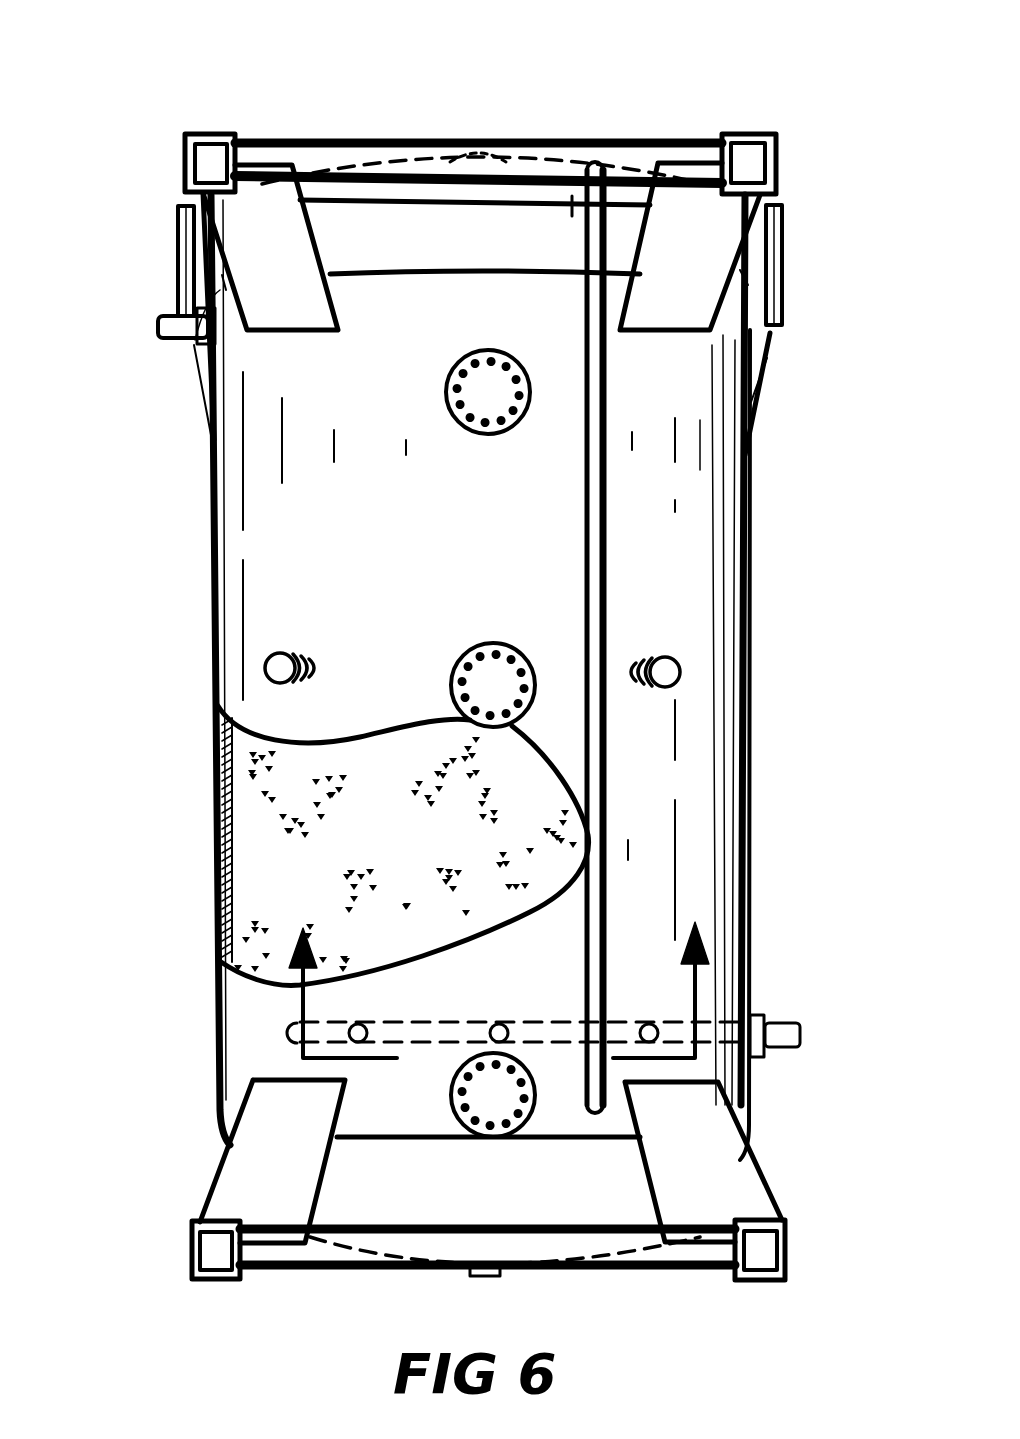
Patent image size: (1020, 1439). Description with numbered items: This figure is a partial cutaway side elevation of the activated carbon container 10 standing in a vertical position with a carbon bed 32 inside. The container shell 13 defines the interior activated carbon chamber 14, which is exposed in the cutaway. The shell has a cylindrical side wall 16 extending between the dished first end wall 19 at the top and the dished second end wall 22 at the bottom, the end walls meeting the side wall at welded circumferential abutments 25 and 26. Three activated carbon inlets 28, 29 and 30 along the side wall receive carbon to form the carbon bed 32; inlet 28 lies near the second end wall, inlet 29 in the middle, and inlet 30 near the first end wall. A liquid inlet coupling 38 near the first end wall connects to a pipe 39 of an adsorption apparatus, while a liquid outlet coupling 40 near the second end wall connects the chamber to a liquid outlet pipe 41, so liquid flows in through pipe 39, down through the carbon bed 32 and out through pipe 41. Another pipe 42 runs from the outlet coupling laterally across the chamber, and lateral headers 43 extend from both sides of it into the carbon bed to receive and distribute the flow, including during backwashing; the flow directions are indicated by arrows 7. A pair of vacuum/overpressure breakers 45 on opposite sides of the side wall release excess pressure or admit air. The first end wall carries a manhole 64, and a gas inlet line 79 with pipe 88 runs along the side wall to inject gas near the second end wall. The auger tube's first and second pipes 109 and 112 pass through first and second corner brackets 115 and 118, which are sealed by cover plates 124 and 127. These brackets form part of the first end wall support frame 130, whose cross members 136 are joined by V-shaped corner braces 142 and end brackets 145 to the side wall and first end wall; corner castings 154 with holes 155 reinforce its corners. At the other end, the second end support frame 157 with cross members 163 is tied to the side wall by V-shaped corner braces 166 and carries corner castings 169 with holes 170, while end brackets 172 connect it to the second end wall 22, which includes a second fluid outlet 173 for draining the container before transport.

The container 10 is at (760, 42).
The container shell 13 is at (527, 677).
The activated carbon chamber 14 is at (258, 853).
The cylindrical side wall 16 is at (450, 529).
The first end wall 19 is at (422, 240).
The second end wall 22 is at (475, 1191).
The first circumferential abutment 25 is at (440, 284).
The second circumferential abutment 26 is at (413, 1134).
The activated carbon inlet 28 is at (501, 1111).
The activated carbon inlet 29 is at (500, 699).
The activated carbon inlet 30 is at (494, 405).
The carbon bed 32 is at (382, 835).
The liquid inlet coupling 38 is at (205, 378).
The pipe 39 is at (172, 316).
The liquid outlet coupling 40 is at (758, 1058).
The liquid outlet pipe 41 is at (780, 1023).
The pipe 42 is at (493, 1022).
The lateral headers 43 is at (360, 1024).
The vacuum/overpressure breakers 45 is at (278, 654).
The manhole 64 is at (482, 150).
The air flow arrows 7 is at (503, 990).
The gas inlet line 79 is at (617, 781).
The pipe 88 is at (600, 504).
The first pipe 109 is at (745, 272).
The second pipe 112 is at (226, 285).
The first corner bracket 115 is at (761, 338).
The second corner bracket 118 is at (192, 344).
The cover plate 124 is at (784, 230).
The cover plate 127 is at (180, 246).
The first end wall support frame 130 is at (326, 135).
The cross members 136 is at (350, 140).
The V-shaped corner braces 142 is at (284, 270).
The end brackets 145 is at (572, 210).
The corner castings 154 is at (188, 170).
The holes 155 is at (205, 152).
The second end support frame 157 is at (655, 1272).
The cross members 163 is at (332, 1270).
The V-shaped corner braces 166 is at (286, 1160).
The corner castings 169 is at (192, 1240).
The holes 170 is at (214, 1268).
The end brackets 172 is at (363, 1213).
The second fluid outlet 173 is at (500, 1276).